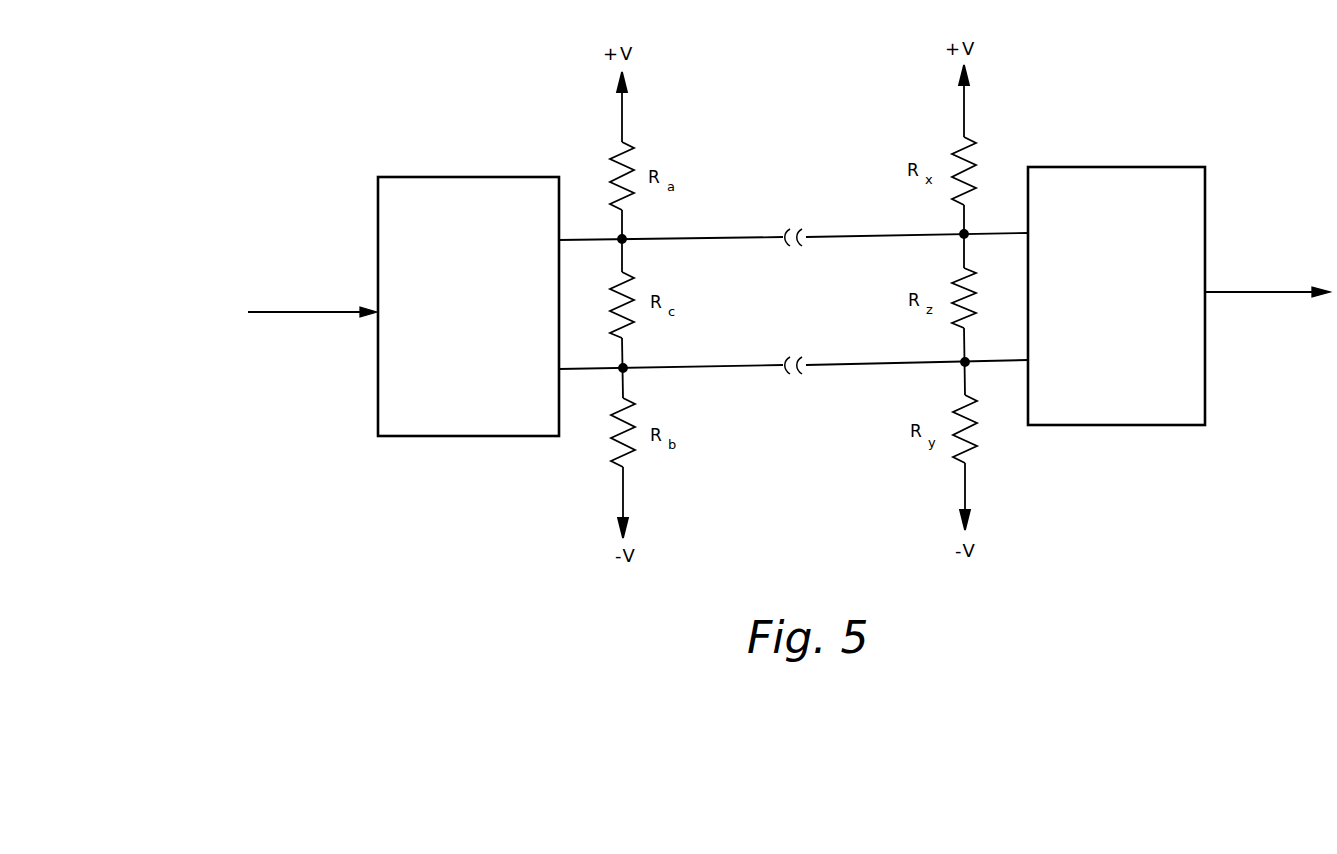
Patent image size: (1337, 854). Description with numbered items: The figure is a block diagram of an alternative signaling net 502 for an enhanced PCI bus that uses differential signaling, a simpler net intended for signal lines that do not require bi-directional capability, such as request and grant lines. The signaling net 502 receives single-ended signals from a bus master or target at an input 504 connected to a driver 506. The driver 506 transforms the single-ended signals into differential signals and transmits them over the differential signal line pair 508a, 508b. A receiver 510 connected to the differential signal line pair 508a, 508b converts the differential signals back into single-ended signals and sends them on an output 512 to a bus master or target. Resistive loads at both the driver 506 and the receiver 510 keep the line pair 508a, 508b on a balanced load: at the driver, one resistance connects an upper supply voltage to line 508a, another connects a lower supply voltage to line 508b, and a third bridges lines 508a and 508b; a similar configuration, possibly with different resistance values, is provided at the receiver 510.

The signaling net 502 is at (270, 313).
The input 504 is at (377, 302).
The driver 506 is at (420, 146).
The differential signal line 508a is at (750, 238).
The differential signal line 508b is at (750, 367).
The receiver 510 is at (1164, 167).
The output 512 is at (1208, 292).